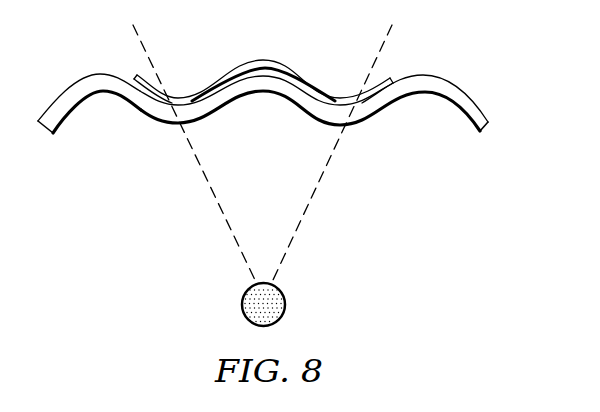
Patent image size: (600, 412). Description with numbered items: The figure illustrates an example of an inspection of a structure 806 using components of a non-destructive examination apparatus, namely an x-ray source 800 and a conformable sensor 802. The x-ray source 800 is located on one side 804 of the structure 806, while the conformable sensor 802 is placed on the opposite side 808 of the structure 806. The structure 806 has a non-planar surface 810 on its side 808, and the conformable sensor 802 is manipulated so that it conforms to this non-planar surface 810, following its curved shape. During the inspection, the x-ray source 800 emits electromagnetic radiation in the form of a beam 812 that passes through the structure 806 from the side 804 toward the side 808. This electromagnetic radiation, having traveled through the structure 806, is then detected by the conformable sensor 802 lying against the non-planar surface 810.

The x-ray source 800 is at (285, 306).
The conformable sensor 802 is at (245, 63).
The side 804 is at (382, 113).
The structure 806 is at (488, 126).
The side 808 is at (458, 86).
The non-planar surface 810 is at (69, 89).
The beam 812 is at (213, 189).